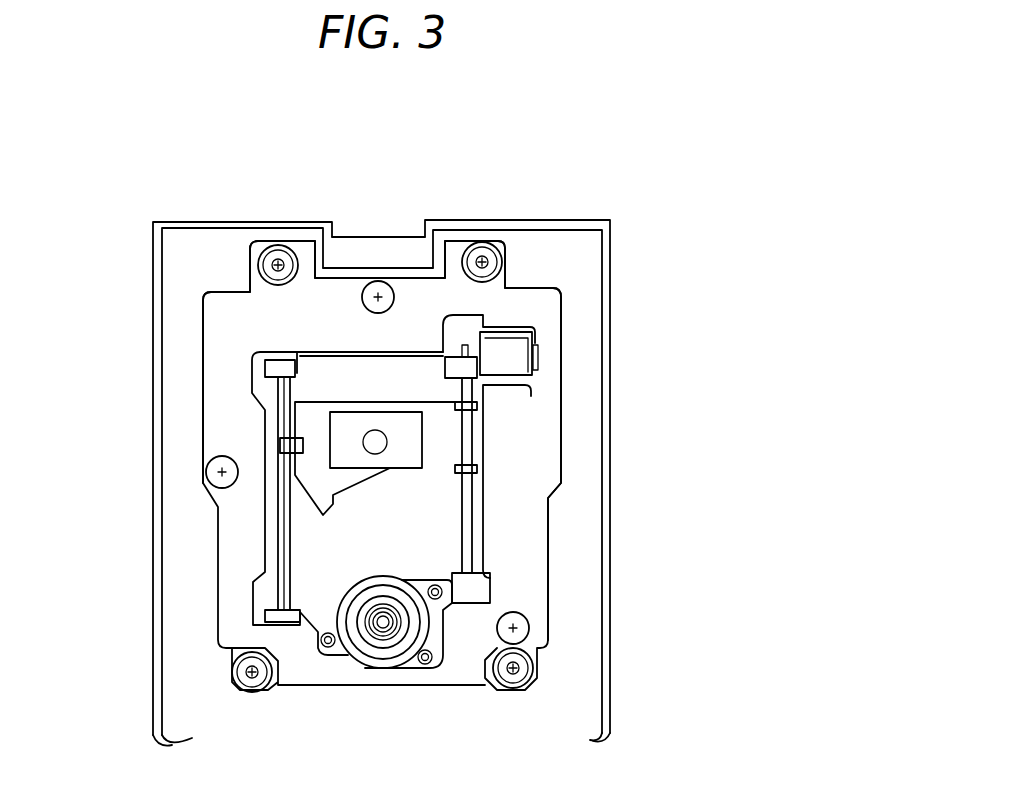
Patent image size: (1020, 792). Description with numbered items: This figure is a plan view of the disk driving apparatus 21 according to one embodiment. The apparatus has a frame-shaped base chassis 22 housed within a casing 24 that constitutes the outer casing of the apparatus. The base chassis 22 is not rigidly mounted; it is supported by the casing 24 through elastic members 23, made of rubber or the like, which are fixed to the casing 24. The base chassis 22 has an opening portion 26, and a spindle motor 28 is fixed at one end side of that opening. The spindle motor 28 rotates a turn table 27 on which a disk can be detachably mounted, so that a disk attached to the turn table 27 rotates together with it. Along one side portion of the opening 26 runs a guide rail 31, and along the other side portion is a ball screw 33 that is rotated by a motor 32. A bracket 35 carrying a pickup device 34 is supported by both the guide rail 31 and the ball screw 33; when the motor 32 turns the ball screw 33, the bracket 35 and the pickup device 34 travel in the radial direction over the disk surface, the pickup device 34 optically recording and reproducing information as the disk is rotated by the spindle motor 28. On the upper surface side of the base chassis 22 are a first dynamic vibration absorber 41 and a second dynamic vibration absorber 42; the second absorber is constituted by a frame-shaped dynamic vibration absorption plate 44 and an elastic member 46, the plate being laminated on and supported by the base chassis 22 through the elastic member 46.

The disk driving apparatus 21 is at (594, 204).
The base chassis 22 is at (457, 243).
The elastic members 23 is at (262, 247).
The casing 24 is at (610, 348).
The opening portion 26 is at (277, 543).
The turn table 27 is at (386, 618).
The spindle motor 28 is at (388, 668).
The guide rail 31 is at (283, 502).
The motor 32 is at (515, 363).
The ball screw 33 is at (476, 507).
The pickup device 34 is at (377, 428).
The bracket 35 is at (437, 463).
The first dynamic vibration absorber 41 is at (565, 308).
The second dynamic vibration absorber 42 is at (382, 440).
The dynamic vibration absorption plate 44 is at (541, 460).
The elastic member 46 is at (362, 301).